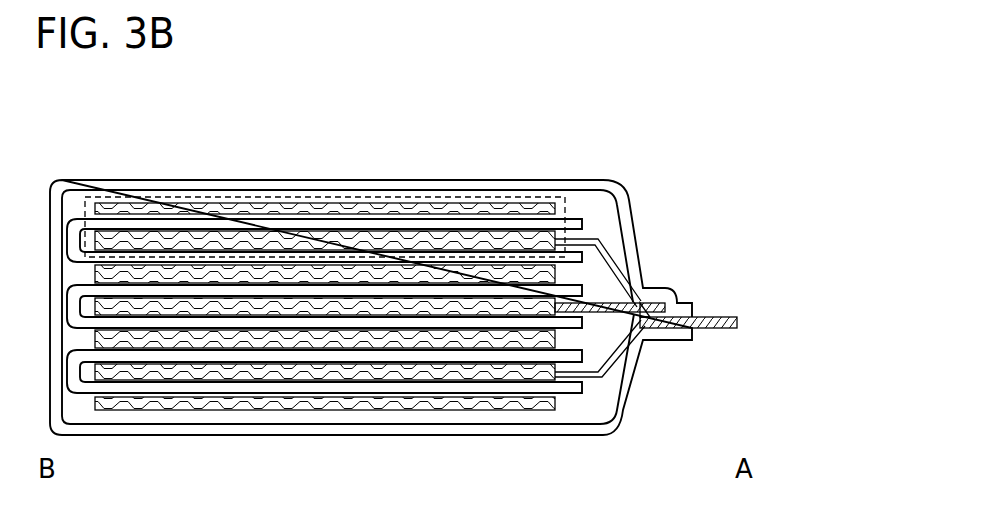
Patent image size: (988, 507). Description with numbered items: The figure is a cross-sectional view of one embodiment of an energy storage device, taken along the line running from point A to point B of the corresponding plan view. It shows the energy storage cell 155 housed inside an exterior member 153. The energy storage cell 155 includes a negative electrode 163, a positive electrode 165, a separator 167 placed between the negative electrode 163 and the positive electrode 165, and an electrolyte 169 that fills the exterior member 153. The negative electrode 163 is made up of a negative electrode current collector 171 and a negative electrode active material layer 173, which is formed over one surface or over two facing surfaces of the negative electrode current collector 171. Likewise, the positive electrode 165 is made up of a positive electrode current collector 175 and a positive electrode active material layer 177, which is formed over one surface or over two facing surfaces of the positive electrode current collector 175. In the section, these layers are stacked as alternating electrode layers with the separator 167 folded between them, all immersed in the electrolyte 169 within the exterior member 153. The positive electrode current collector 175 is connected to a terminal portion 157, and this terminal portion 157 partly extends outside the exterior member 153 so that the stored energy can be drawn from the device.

The exterior member 153 is at (632, 234).
The energy storage cell 155 is at (118, 197).
The terminal portion 157 is at (737, 317).
The negative electrode 163 is at (325, 231).
The positive electrode 165 is at (380, 216).
The separator 167 is at (307, 225).
The electrolyte 169 is at (597, 220).
The negative electrode current collector 171 is at (193, 207).
The negative electrode active material layer 173 is at (250, 217).
The positive electrode current collector 175 is at (455, 243).
The positive electrode active material layer 177 is at (413, 250).